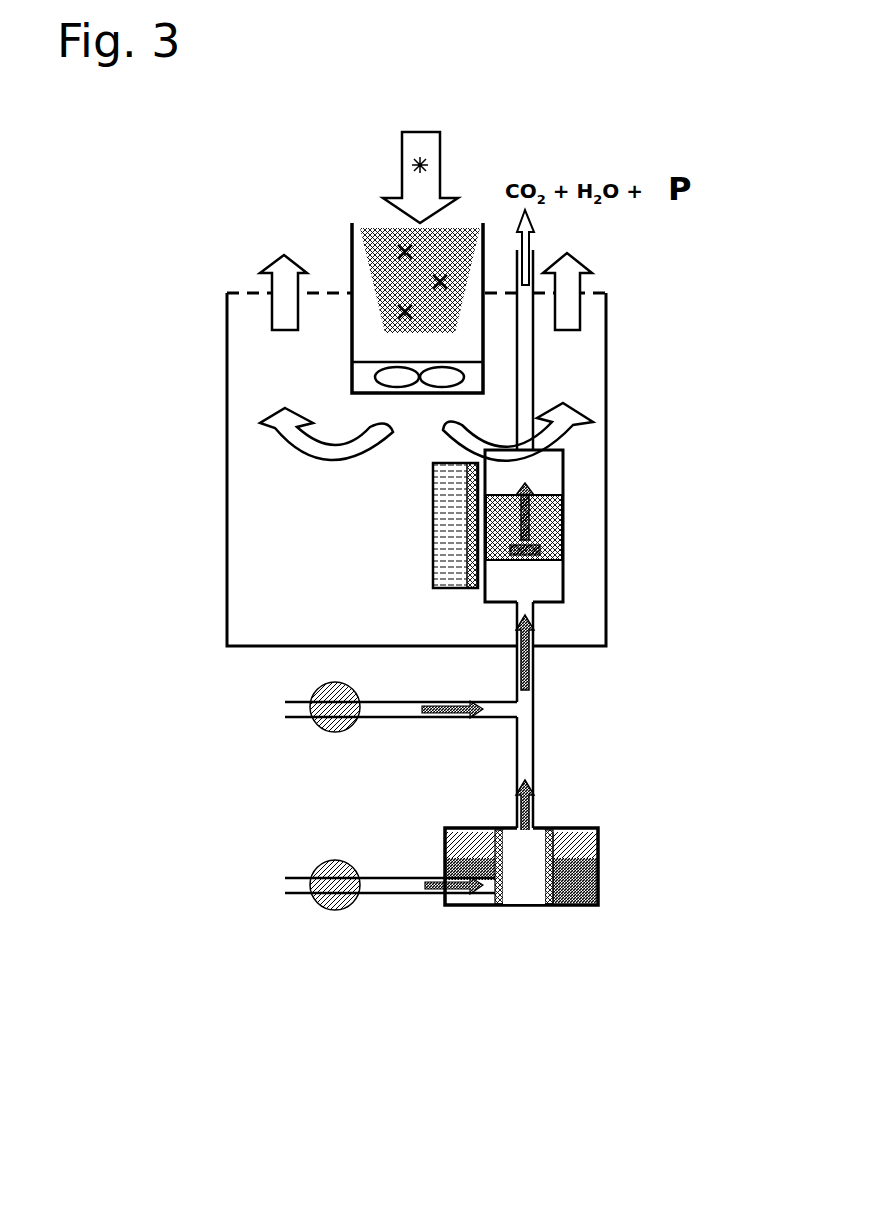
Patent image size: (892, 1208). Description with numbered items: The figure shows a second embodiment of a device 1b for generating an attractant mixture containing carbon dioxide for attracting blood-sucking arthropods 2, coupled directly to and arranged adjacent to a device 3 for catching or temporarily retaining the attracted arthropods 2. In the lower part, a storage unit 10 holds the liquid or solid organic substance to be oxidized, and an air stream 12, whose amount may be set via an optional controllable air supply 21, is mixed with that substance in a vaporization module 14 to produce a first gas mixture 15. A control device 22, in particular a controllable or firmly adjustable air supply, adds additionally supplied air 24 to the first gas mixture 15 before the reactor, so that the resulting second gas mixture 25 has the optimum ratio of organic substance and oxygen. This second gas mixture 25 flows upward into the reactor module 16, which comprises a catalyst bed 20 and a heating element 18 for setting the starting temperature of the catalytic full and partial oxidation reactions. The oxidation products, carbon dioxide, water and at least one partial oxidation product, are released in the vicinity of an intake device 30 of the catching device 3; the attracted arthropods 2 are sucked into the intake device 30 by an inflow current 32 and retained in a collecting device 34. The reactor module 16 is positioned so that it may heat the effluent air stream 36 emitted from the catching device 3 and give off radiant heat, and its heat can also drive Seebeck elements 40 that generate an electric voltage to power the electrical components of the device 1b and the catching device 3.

The device for generating an attractant mixture 1b is at (255, 980).
The blood-sucking arthropods 2 is at (433, 167).
The device for catching or temporarily retaining arthropods 3 is at (318, 352).
The storage unit 10 is at (597, 905).
The air stream 12 is at (425, 897).
The vaporization module 14 is at (525, 885).
The first gas mixture 15 is at (536, 822).
The reactor module 16 is at (665, 443).
The heating element 18 is at (540, 558).
The catalyst bed 20 is at (550, 540).
The controllable air supply 21 is at (312, 868).
The control device 22 is at (310, 725).
The additionally supplied air 24 is at (426, 718).
The second gas mixture 25 is at (536, 652).
The intake device 30 is at (398, 385).
The inflow current 32 is at (418, 140).
The collecting device 34 is at (362, 245).
The effluent air stream 36 is at (282, 300).
The Seebeck elements 40 is at (433, 545).